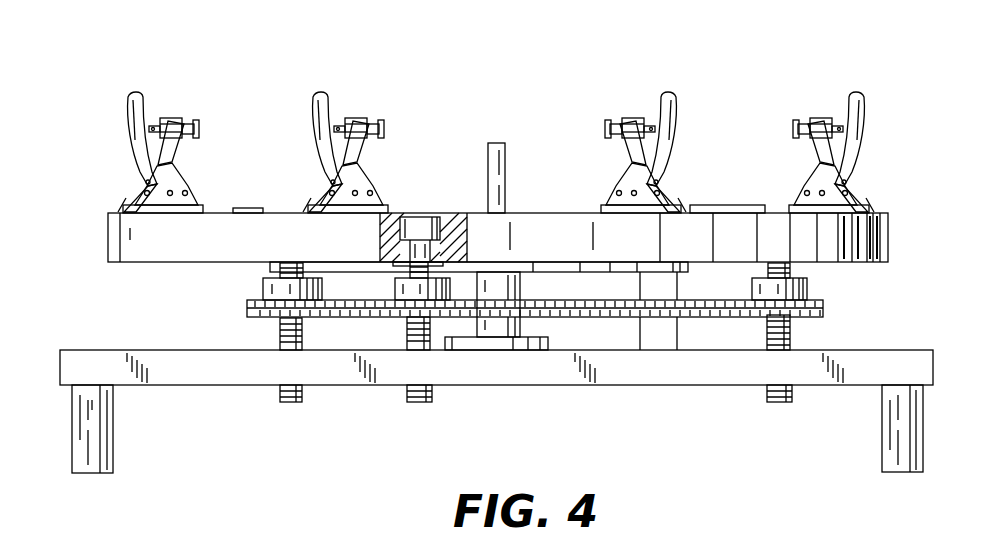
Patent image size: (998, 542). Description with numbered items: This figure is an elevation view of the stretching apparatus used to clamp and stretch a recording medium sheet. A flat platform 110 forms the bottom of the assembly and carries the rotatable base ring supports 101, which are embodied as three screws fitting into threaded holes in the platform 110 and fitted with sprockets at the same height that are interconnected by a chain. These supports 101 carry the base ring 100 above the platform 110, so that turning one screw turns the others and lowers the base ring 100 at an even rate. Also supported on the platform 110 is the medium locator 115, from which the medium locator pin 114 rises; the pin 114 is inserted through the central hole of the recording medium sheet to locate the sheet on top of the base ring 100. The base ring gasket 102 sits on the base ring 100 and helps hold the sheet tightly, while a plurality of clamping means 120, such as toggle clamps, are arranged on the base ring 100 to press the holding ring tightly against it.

The base ring 100 is at (887, 227).
The base ring supports 101 is at (303, 402).
The base ring gasket 102 is at (740, 207).
The platform 110 is at (915, 350).
The medium locator pin 114 is at (508, 160).
The medium locator 115 is at (520, 287).
The clamping means 120 is at (323, 115).